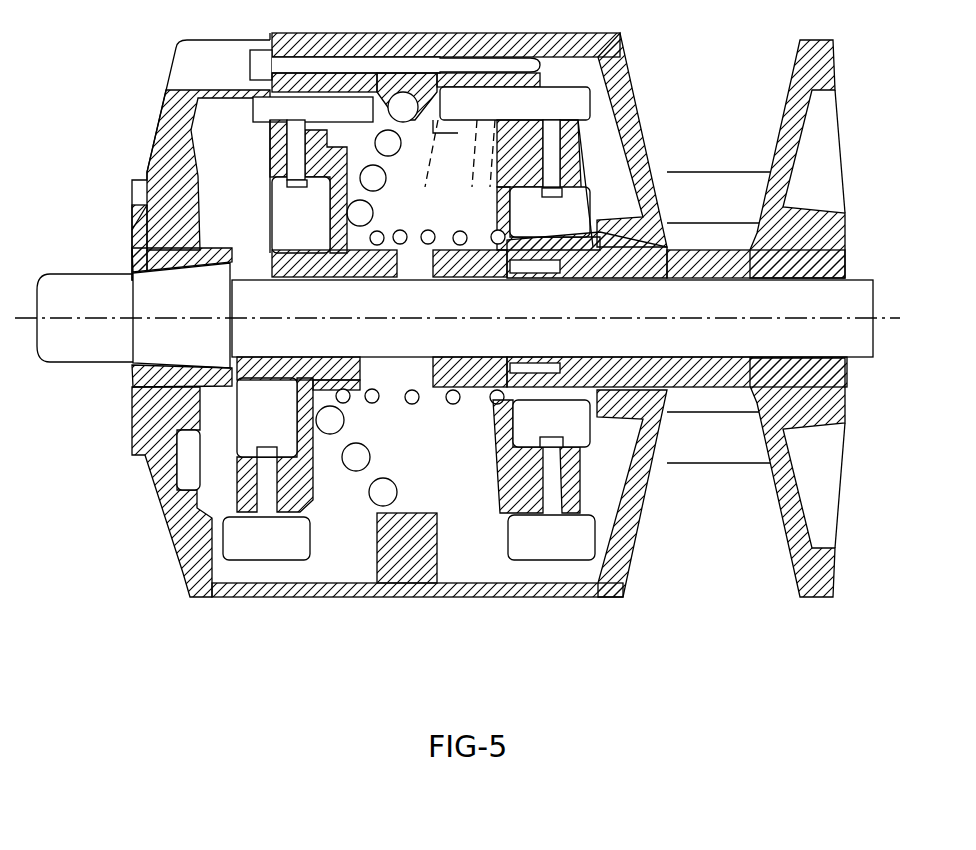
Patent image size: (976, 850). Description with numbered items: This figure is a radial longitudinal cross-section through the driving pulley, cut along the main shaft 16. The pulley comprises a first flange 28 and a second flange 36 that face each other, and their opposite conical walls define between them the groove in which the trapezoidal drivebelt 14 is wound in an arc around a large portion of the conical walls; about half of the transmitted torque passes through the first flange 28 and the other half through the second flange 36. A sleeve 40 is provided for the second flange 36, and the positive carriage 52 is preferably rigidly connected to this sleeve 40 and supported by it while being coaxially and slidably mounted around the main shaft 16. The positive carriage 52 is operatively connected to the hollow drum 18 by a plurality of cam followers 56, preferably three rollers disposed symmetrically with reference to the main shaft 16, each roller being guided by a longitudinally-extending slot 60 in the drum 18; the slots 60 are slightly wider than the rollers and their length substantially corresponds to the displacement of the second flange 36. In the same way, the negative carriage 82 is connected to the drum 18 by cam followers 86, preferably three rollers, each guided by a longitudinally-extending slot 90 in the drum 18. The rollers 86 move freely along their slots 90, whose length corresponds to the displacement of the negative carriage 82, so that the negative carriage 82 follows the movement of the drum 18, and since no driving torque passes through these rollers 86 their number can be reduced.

The trapezoidal drivebelt 14 is at (735, 450).
The main shaft 16 is at (855, 297).
The hollow drum 18 is at (237, 594).
The first flange 28 is at (613, 583).
The second flange 36 is at (820, 573).
The sleeve 40 is at (713, 357).
The positive carriage 52 is at (485, 358).
The cam followers 56 is at (540, 543).
The slots 60 is at (558, 573).
The negative carriage 82 is at (308, 367).
The cam followers 86 is at (285, 551).
The slots 90 is at (223, 565).